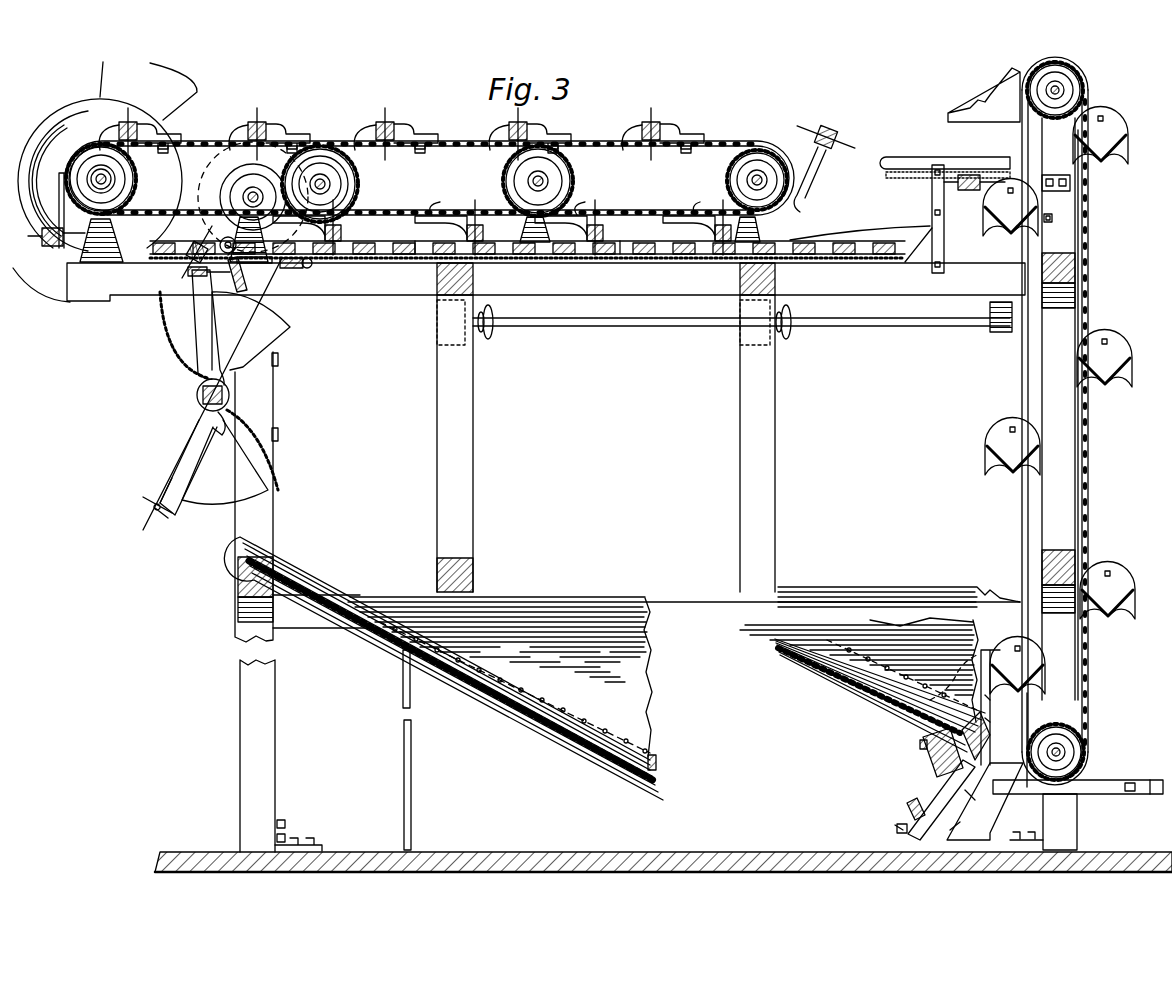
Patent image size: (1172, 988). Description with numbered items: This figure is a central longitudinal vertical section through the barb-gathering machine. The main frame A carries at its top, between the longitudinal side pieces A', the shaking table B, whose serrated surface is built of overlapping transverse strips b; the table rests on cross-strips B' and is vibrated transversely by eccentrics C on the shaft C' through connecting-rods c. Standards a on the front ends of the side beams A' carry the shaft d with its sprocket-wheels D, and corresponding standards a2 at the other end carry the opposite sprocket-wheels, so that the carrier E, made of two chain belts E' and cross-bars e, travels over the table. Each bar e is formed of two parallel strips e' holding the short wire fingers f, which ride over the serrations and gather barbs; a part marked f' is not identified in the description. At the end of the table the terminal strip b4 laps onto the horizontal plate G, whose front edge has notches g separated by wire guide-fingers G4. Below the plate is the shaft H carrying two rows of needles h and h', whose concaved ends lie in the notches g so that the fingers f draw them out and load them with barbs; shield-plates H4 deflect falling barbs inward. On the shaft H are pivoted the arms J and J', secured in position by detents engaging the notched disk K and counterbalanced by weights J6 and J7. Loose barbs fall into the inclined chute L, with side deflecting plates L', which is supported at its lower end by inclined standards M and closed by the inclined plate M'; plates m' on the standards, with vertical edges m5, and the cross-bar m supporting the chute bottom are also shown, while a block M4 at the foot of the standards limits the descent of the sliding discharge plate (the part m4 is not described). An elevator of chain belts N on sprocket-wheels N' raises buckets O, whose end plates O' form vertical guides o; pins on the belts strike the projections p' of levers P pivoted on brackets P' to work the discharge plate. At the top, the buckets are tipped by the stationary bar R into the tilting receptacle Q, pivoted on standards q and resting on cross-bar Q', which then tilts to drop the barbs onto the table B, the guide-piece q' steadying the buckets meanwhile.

The main frame A is at (656, 485).
The longitudinal side pieces A' is at (519, 282).
The shaking table B is at (861, 239).
The cross-strips B' is at (492, 252).
The transverse metal strips b is at (524, 236).
The terminal strip b4 is at (312, 266).
The eccentrics C is at (647, 327).
The eccentric shaft C' is at (742, 324).
The connecting-rods c is at (492, 312).
The sprocket-wheels D is at (107, 156).
The sprocket shaft d is at (106, 179).
The carrier E is at (534, 166).
The chain belts E' is at (429, 178).
The cross-bars e is at (562, 175).
The parallel strips e' is at (472, 127).
The fingers f is at (531, 190).
The pin f' is at (492, 128).
The transverse plate G is at (264, 276).
The guide fingers G4 is at (250, 267).
The notches g is at (251, 265).
The needle shaft H is at (197, 395).
The shield-plates H4 is at (165, 330).
The needles h is at (212, 394).
The needles h' is at (172, 467).
The arms J is at (208, 327).
The arms J' is at (181, 467).
The counterbalance-weight J6 is at (225, 458).
The counterbalance-weight J7 is at (251, 331).
The disk K is at (253, 197).
The chute L is at (604, 668).
The inclined plates L' is at (684, 672).
The inclined standards M is at (985, 801).
The inclined plate M' is at (994, 718).
The bars M4 is at (898, 830).
The cross-bar m is at (906, 745).
The end plates m' is at (1002, 700).
The pin m4 is at (895, 810).
The vertical edges m5 is at (990, 722).
The chain belts N is at (1053, 421).
The sprocket-wheels N' is at (1055, 90).
The elevator-buckets O is at (1066, 413).
The bucket end plates O' is at (1059, 400).
The vertical guides o is at (1130, 145).
The levers P is at (1000, 775).
The brackets P' is at (1061, 819).
The inward projections p' is at (1022, 814).
The tilting receptacle Q is at (945, 163).
The cross-bar Q' is at (974, 194).
The vertical standards q is at (928, 219).
The guide-piece q' is at (1056, 209).
The stationary bar R is at (972, 102).
The standards a is at (56, 210).
The standards a2 is at (810, 181).